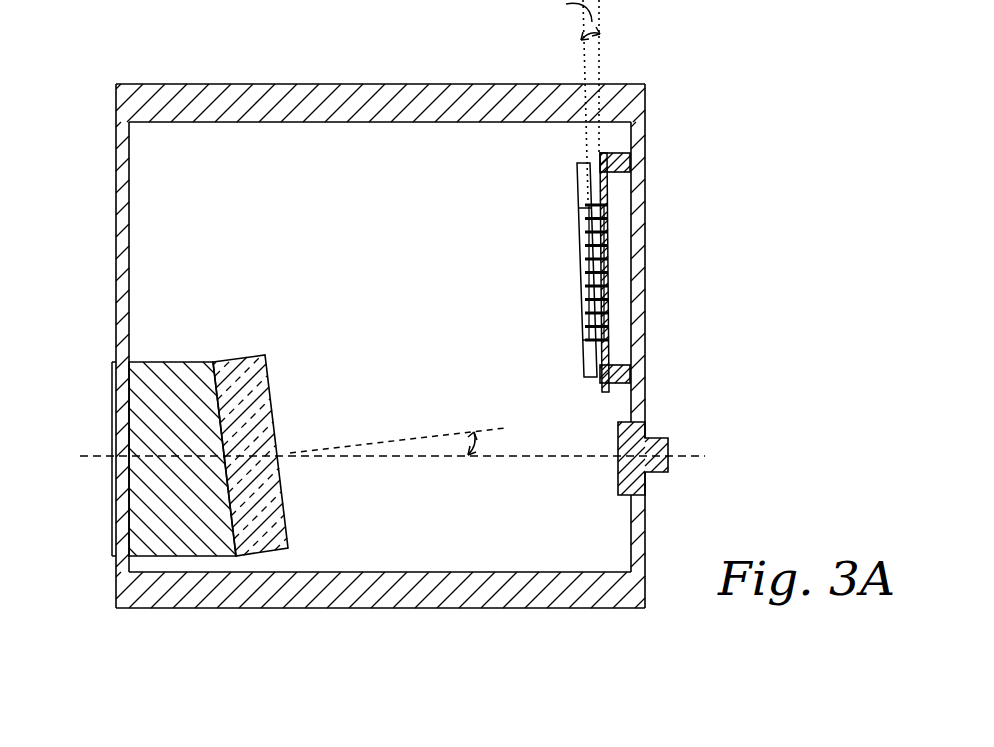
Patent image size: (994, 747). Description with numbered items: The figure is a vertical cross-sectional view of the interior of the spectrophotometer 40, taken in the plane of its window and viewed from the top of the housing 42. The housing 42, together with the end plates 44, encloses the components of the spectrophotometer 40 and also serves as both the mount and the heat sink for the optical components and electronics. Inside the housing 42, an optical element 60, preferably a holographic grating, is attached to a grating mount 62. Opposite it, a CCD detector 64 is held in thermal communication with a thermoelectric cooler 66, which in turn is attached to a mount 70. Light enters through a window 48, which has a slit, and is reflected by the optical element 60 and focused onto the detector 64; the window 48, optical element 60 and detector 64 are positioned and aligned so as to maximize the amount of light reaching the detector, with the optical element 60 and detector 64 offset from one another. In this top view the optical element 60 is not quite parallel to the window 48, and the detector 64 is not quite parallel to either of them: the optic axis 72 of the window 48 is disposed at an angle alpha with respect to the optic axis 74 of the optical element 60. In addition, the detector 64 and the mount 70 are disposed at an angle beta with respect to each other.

The spectrophotometer 40 is at (757, 225).
The housing 42 is at (367, 84).
The end plates 44 is at (118, 312).
The window 48 is at (653, 438).
The optical element 60 is at (290, 366).
The grating mount 62 is at (182, 362).
The CCD detector 64 is at (577, 182).
The thermoelectric cooler 66 is at (620, 207).
The mount 70 is at (600, 388).
The optic axis of window 72 is at (437, 460).
The optic axis of optical element 74 is at (390, 436).